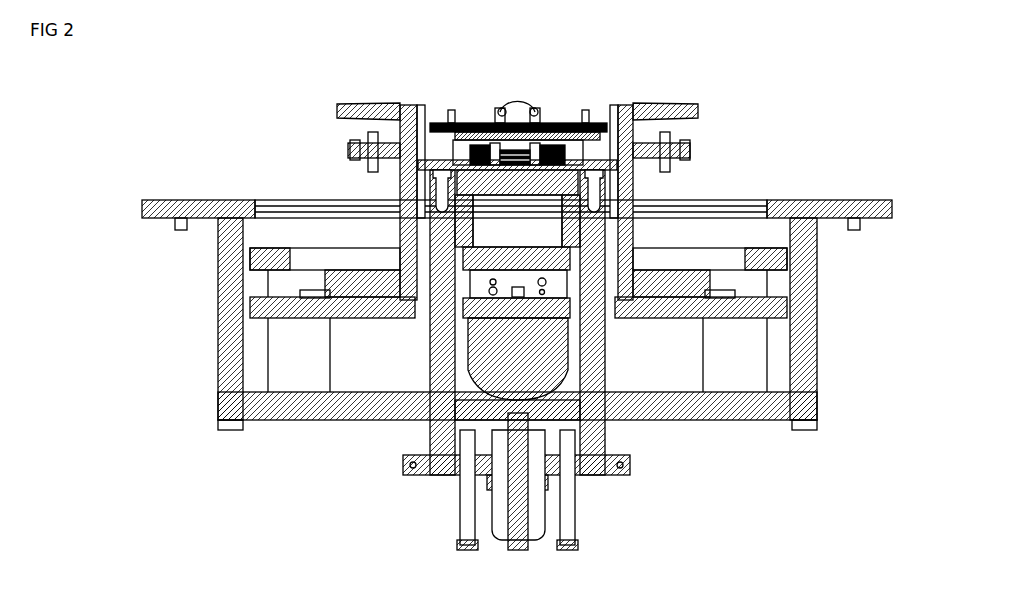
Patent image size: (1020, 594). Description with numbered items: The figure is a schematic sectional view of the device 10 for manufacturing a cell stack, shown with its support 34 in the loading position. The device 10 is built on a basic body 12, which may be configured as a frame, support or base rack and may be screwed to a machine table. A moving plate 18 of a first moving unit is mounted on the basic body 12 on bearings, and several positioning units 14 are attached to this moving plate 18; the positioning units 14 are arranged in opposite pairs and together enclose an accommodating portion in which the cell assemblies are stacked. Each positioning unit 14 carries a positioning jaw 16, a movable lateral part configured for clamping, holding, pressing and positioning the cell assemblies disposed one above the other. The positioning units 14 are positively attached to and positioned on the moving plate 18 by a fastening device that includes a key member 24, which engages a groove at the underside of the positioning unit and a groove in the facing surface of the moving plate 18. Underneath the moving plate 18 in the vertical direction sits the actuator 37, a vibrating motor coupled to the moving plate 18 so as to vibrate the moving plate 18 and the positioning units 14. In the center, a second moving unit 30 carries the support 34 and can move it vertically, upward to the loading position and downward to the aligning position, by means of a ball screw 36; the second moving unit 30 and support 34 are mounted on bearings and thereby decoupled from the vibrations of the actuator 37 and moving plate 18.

The device 10 is at (121, 514).
The basic body 12 is at (190, 349).
The positioning unit 14 is at (366, 80).
The positioning jaw 16 is at (591, 133).
The moving plate 18 is at (770, 315).
The key member 24 is at (311, 268).
The second moving unit 30 is at (726, 504).
The support 34 is at (480, 105).
The ball screw 36 is at (545, 516).
The actuator 37 is at (538, 374).